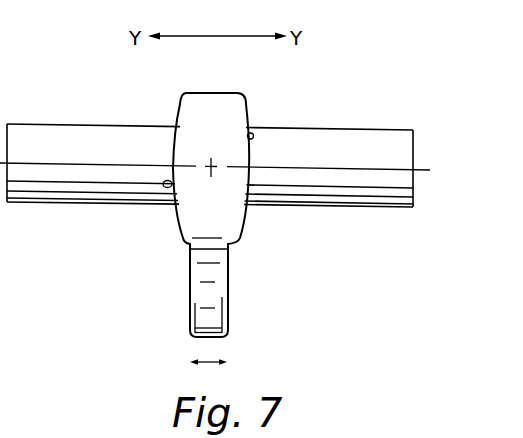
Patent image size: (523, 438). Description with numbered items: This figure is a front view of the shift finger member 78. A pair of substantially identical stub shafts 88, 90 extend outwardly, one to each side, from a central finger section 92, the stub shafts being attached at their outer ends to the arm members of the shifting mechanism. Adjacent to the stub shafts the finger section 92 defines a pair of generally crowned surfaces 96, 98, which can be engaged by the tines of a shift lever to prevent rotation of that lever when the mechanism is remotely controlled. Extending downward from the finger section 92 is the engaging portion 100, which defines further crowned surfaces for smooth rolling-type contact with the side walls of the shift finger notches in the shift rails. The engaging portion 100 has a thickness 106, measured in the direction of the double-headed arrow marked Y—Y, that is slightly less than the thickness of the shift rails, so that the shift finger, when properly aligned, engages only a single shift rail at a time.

The shift finger member 78 is at (296, 114).
The stub shaft 88 is at (31, 132).
The stub shaft 90 is at (348, 143).
The finger section 92 is at (225, 113).
The crowned surface 96 is at (247, 136).
The crowned surface 98 is at (171, 187).
The engaging portion 100 is at (241, 322).
The thickness 106 is at (208, 365).